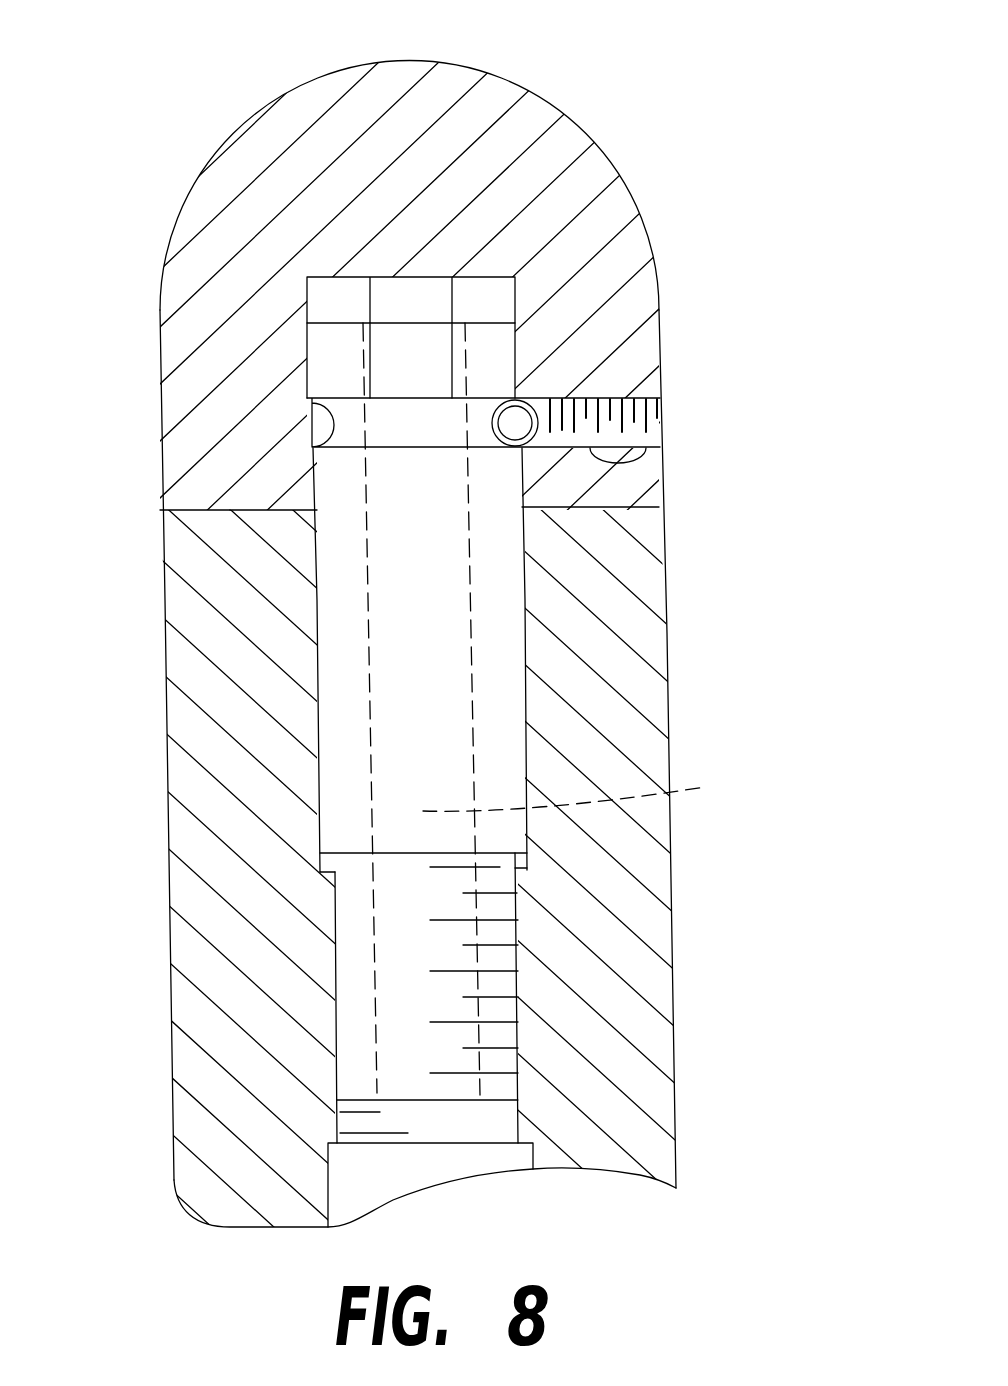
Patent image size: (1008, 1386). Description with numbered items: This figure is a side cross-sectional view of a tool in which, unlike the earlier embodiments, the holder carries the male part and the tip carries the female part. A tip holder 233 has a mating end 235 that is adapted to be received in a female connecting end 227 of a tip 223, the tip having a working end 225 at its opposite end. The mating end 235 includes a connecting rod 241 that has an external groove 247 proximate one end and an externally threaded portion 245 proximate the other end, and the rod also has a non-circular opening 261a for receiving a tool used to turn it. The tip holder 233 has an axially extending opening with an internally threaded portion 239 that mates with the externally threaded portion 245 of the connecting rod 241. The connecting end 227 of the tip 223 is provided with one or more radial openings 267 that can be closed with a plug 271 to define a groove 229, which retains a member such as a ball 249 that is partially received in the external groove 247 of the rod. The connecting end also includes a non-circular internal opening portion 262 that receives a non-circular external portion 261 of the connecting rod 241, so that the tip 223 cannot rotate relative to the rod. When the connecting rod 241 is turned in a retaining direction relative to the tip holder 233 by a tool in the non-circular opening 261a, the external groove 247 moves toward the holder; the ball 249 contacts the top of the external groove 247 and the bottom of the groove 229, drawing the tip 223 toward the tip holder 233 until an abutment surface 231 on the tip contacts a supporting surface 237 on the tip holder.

The tip 223 is at (655, 172).
The working end 225 is at (502, 72).
The female connecting end 227 is at (534, 517).
The groove 229 is at (522, 447).
The abutment surface 231 is at (203, 513).
The tip holder 233 is at (680, 722).
The mating end 235 is at (616, 495).
The supporting surface 237 is at (257, 510).
The internally threaded portion 239 is at (520, 985).
The connecting rod 241 is at (494, 680).
The externally threaded portion 245 is at (500, 957).
The external groove 247 is at (410, 420).
The ball 249 is at (500, 410).
The non-circular external portion 261 is at (495, 352).
The non-circular opening 261a is at (596, 792).
The non-circular internal opening portion 262 is at (490, 297).
The radial openings 267 is at (647, 452).
The plug 271 is at (627, 408).